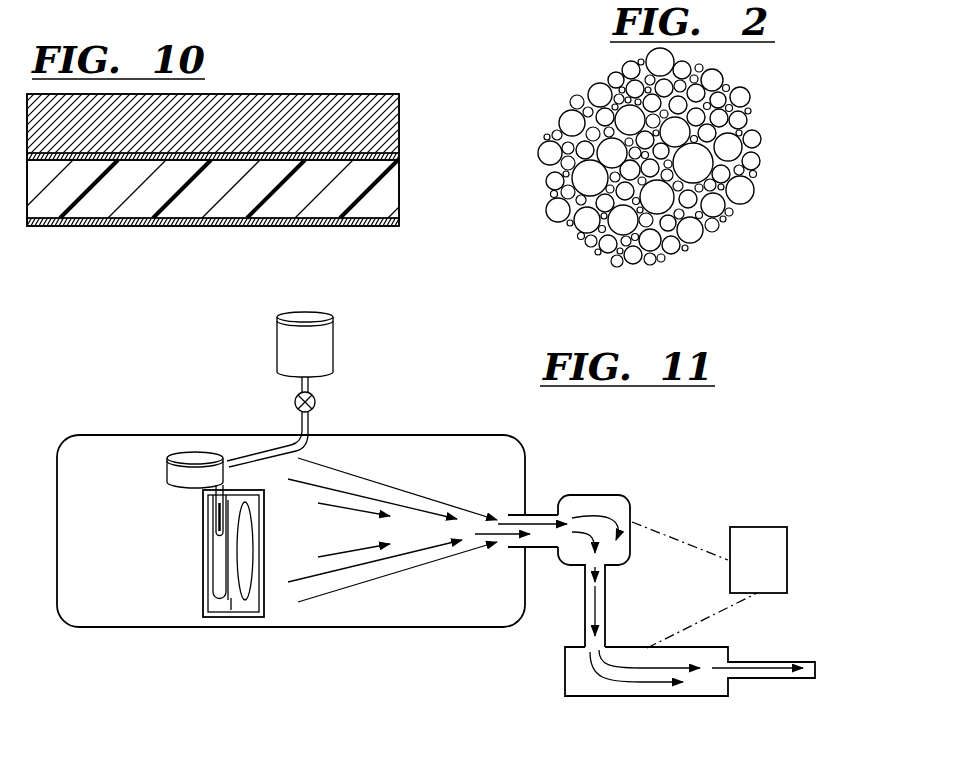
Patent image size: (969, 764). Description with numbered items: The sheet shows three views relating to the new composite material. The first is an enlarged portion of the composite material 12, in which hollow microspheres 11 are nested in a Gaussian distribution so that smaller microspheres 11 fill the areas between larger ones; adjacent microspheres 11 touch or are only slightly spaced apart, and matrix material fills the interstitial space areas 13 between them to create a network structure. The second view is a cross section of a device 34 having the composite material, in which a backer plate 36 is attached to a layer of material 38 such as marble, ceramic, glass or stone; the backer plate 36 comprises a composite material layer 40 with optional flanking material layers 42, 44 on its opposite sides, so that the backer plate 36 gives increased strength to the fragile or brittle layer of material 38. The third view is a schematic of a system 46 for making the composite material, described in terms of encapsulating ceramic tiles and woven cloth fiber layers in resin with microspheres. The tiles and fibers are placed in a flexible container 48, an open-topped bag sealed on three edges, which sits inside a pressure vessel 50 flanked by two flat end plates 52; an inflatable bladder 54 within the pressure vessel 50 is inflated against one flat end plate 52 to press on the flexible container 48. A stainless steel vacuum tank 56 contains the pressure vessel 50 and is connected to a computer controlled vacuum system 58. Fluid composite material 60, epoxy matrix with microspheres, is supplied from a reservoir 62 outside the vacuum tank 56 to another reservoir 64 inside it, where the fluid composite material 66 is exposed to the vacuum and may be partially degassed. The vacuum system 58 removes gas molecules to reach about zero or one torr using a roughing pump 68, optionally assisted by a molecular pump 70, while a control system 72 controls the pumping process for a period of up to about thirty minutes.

In FIG. 2, the hollow microspheres 11 is at (746, 100).
In FIG. 2, the composite material 12 is at (670, 163).
In FIG. 2, the interstitial space areas 13 is at (643, 262).
In FIG. 10, the device 34 is at (234, 78).
In FIG. 10, the backer plate 36 is at (437, 199).
In FIG. 10, the layer of material 38 is at (318, 94).
In FIG. 10, the composite material layer 40 is at (399, 188).
In FIG. 10, the flanking material layer 42 is at (399, 156).
In FIG. 10, the flanking material layer 44 is at (390, 226).
In FIG. 11, the system 46 is at (288, 295).
In FIG. 11, the flexible container 48 is at (214, 558).
In FIG. 11, the pressure vessel 50 is at (203, 588).
In FIG. 11, the flat end plates 52 is at (203, 572).
In FIG. 11, the inflatable bladder 54 is at (253, 583).
In FIG. 11, the vacuum tank 56 is at (518, 435).
In FIG. 11, the computer controlled vacuum system 58 is at (660, 562).
In FIG. 11, the fluid composite material 60 is at (307, 320).
In FIG. 11, the reservoir 62 is at (333, 345).
In FIG. 11, the reservoir 64 is at (166, 465).
In FIG. 11, the fluid composite material 66 is at (193, 456).
In FIG. 11, the roughing pump 68 is at (565, 688).
In FIG. 11, the molecular pump 70 is at (623, 497).
In FIG. 11, the control system 72 is at (766, 548).